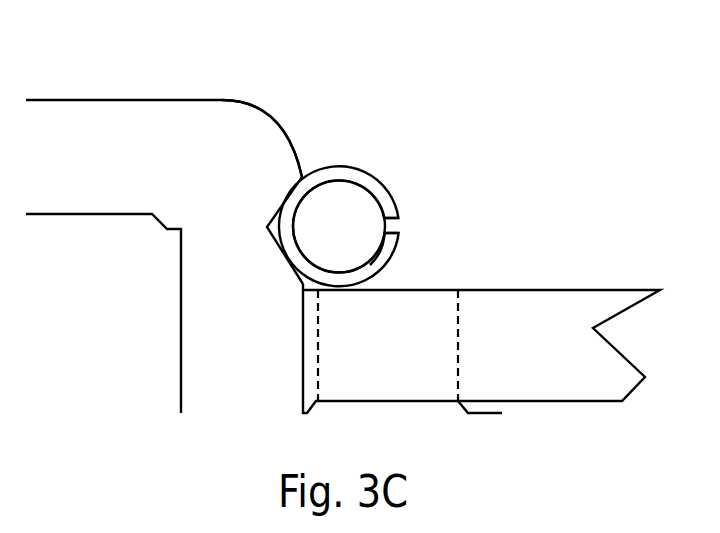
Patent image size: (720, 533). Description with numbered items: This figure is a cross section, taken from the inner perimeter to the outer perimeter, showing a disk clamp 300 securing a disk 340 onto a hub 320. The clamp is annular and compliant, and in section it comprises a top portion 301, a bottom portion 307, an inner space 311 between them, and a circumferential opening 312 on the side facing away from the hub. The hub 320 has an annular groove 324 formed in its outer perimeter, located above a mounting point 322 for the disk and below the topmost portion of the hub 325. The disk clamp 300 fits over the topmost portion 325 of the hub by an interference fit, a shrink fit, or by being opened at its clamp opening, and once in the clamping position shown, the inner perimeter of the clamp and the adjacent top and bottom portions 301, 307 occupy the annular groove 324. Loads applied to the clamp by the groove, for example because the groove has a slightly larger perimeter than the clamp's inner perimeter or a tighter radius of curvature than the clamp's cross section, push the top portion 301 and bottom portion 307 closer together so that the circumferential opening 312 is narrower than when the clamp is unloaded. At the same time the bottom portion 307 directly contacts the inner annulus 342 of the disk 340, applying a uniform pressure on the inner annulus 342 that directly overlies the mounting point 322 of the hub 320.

The disk clamp 300 is at (421, 185).
The top portion 301 is at (376, 187).
The bottom portion 307 is at (388, 250).
The inner space 311 is at (358, 240).
The circumferential opening 312 is at (401, 226).
The hub 320 is at (92, 164).
The mounting point 322 is at (412, 406).
The annular groove 324 is at (268, 228).
The topmost portion of the hub 325 is at (182, 100).
The disk 340 is at (561, 349).
The inner annulus 342 is at (355, 367).